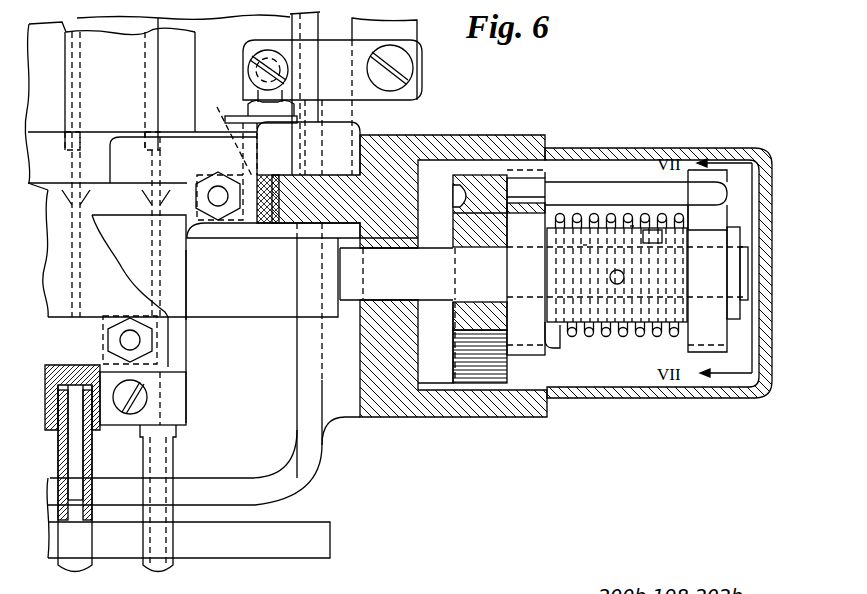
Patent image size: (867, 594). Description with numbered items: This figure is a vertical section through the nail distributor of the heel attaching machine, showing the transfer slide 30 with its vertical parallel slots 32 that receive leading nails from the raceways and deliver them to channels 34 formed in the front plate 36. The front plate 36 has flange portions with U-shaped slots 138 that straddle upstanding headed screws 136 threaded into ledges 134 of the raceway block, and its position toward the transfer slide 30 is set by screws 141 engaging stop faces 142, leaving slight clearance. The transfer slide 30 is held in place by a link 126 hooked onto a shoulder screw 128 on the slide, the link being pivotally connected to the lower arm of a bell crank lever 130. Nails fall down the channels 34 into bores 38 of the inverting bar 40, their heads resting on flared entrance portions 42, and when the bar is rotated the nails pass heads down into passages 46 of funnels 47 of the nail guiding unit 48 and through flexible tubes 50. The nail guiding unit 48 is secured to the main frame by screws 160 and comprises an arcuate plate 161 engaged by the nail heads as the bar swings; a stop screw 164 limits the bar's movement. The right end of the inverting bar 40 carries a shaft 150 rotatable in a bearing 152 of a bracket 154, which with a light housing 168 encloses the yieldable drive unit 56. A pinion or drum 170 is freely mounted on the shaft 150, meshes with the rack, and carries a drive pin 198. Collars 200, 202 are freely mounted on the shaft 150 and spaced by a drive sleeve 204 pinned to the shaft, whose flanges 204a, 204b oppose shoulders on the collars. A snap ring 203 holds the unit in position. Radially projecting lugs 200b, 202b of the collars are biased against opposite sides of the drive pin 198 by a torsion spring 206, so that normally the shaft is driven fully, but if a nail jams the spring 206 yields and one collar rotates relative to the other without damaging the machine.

The transfer slide 30 is at (283, 27).
The vertical parallel slots 32 is at (155, 30).
The channels 34 is at (80, 160).
The front plate 36 is at (112, 30).
The bores 38 is at (158, 240).
The inverting bar 40 is at (240, 322).
The flared entrance portions 42 is at (62, 192).
The passages 46 is at (63, 450).
The funnels 47 is at (48, 385).
The nail guiding unit 48 is at (210, 421).
The flexible tubes 50 is at (58, 563).
The yieldable drive unit 56 is at (622, 166).
The link 126 is at (333, 34).
The shoulder screw 128 is at (255, 55).
The bell crank lever 130 is at (420, 35).
The ledges 134 is at (313, 170).
The upstanding headed screws 136 is at (244, 108).
The U-shaped slots 138 is at (258, 132).
The screws 141 is at (217, 183).
The stop faces 142 is at (241, 226).
The shaft 150 is at (404, 280).
The bearing 152 is at (375, 312).
The bracket 154 is at (428, 135).
The screws 160 is at (130, 414).
The arcuate plate 161 is at (180, 295).
The stop screw 164 is at (140, 343).
The light housing 168 is at (668, 400).
The pinion or drum 170 is at (452, 330).
The drive pin 198 is at (638, 185).
The collar 200 is at (546, 342).
The lug 200b is at (522, 176).
The collar 202 is at (723, 331).
The lug 202b is at (713, 175).
The snap ring 203 is at (745, 306).
The drive sleeve 204 is at (632, 224).
The flange 204a is at (583, 245).
The flange 204b is at (653, 230).
The torsion spring 206 is at (595, 335).